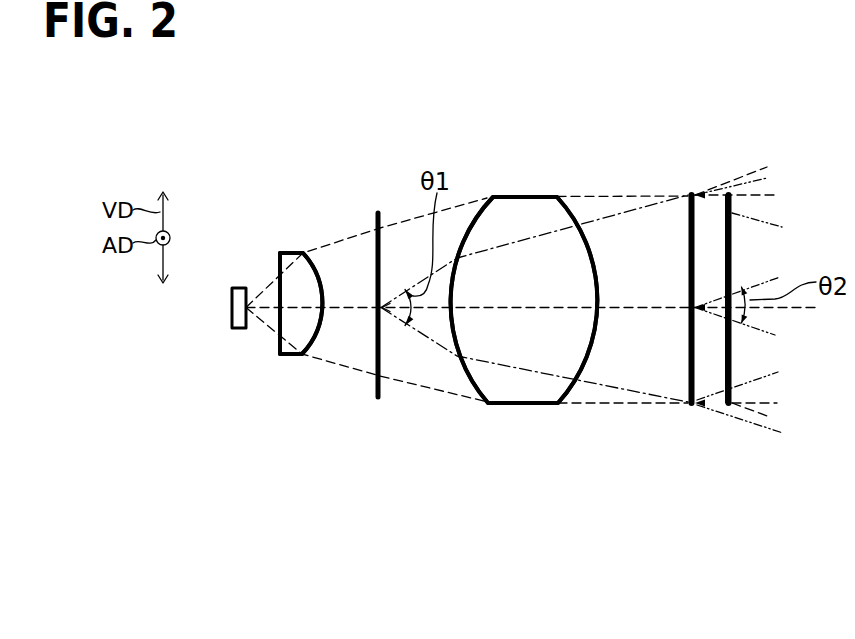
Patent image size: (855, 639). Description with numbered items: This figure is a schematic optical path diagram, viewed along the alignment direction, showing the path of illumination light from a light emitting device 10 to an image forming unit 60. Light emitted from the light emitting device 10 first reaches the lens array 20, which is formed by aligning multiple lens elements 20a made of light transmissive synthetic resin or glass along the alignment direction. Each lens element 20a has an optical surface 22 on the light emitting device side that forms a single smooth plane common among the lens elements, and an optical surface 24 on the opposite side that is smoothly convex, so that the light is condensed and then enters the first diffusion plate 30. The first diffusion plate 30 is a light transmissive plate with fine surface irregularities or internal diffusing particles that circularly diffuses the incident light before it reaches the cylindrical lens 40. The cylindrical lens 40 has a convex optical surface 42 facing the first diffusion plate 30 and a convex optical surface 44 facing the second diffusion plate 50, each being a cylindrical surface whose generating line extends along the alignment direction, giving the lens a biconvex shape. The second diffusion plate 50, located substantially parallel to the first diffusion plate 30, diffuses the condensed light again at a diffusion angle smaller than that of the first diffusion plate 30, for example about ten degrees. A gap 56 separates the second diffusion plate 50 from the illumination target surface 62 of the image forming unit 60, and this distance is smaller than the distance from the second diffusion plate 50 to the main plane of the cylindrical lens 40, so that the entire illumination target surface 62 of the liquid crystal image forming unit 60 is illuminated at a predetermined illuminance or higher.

The light emitting device 10 is at (237, 331).
The lens array 20 is at (290, 339).
The lens element 20a is at (292, 357).
The optical surface 22 is at (276, 258).
The optical surface 24 is at (322, 268).
The first diffusion plate 30 is at (380, 398).
The cylindrical lens 40 is at (522, 406).
The optical surface 42 is at (485, 207).
The optical surface 44 is at (578, 208).
The second diffusion plate 50 is at (688, 380).
The gap 56 is at (710, 380).
The image forming unit 60 is at (733, 398).
The illumination target surface 62 is at (723, 222).